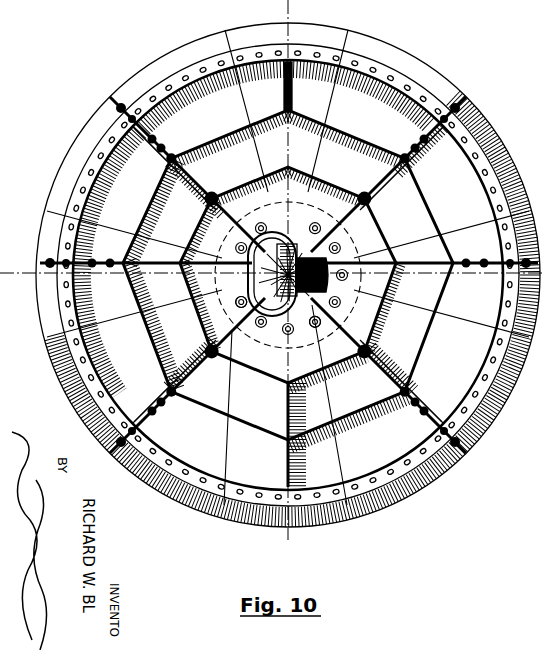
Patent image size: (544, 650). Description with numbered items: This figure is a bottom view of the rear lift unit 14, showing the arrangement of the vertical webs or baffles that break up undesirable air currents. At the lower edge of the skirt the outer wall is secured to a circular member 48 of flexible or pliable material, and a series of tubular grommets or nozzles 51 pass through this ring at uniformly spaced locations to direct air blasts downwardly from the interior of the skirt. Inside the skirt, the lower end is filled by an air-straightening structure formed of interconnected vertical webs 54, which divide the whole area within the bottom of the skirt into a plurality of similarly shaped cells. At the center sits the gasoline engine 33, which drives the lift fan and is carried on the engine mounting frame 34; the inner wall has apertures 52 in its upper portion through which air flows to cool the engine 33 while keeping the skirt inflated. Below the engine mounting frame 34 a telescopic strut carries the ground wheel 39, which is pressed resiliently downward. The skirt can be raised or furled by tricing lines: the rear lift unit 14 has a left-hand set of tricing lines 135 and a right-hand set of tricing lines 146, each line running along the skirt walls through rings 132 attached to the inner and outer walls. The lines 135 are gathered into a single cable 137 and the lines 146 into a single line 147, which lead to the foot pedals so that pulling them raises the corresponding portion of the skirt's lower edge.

The rear lift unit 14 is at (432, 477).
The circular member 48 is at (406, 84).
The tubular grommets or nozzles 51 is at (396, 74).
The engine mounting frame 34 is at (207, 206).
The vertical webs 54 is at (230, 418).
The rings 132 is at (168, 142).
The tricing lines 135 is at (193, 165).
The tricing lines 146 is at (380, 167).
The cable 137 is at (200, 350).
The line 147 is at (400, 370).
The gasoline engine 33 is at (340, 240).
The ground wheel 39 is at (222, 342).
The apertures 52 is at (316, 326).